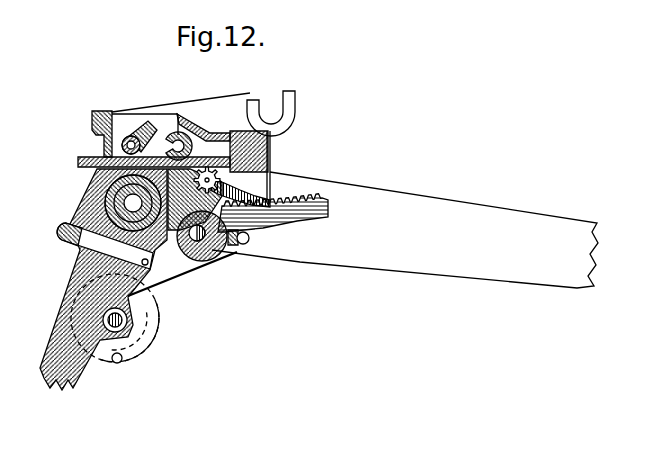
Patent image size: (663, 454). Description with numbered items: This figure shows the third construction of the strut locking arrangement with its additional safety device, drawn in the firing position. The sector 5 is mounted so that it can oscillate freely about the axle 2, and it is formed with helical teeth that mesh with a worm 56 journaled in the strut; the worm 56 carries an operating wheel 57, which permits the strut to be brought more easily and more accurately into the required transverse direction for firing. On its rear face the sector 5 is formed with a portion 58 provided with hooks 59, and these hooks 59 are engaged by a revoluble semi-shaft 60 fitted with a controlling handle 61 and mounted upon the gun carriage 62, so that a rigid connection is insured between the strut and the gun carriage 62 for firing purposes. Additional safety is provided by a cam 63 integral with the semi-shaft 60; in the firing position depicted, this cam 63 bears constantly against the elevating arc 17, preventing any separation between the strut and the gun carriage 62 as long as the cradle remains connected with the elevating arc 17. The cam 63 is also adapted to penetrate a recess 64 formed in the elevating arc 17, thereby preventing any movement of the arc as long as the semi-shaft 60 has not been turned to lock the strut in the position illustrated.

The axle 2 is at (97, 196).
The sector 5 is at (154, 283).
The elevating arc 17 is at (298, 218).
The worm 56 is at (149, 347).
The operating wheel 57 is at (122, 360).
The portion 58 is at (172, 275).
The hooks 59 is at (222, 256).
The semi-shaft 60 is at (208, 249).
The controlling handle 61 is at (245, 244).
The gun carriage 62 is at (88, 173).
The cam 63 is at (212, 258).
The recess 64 is at (203, 213).